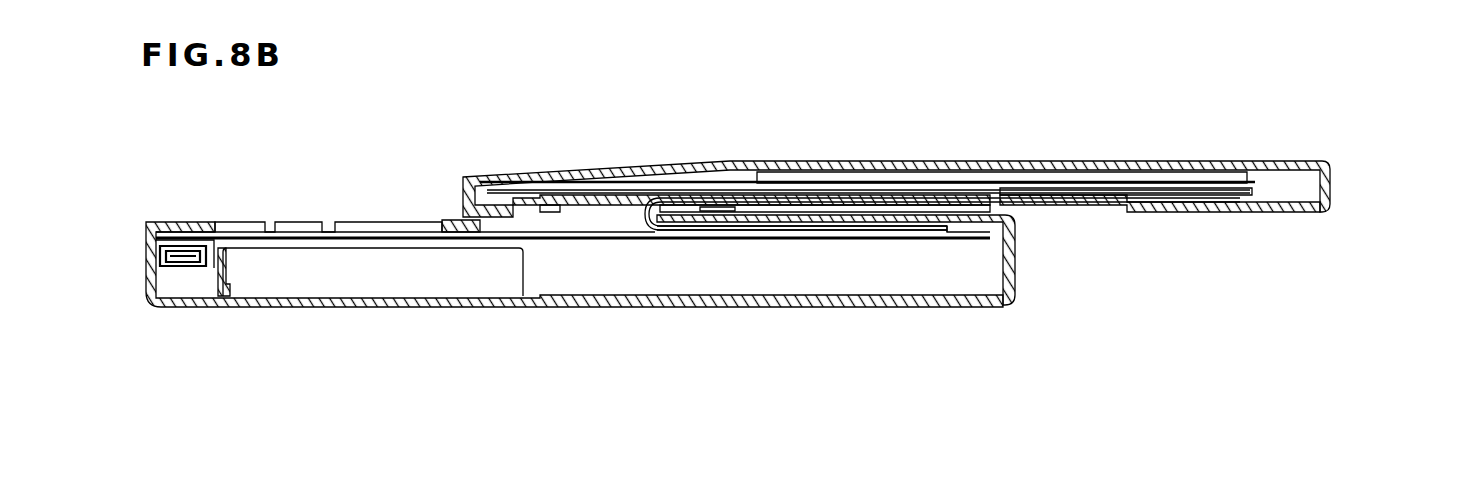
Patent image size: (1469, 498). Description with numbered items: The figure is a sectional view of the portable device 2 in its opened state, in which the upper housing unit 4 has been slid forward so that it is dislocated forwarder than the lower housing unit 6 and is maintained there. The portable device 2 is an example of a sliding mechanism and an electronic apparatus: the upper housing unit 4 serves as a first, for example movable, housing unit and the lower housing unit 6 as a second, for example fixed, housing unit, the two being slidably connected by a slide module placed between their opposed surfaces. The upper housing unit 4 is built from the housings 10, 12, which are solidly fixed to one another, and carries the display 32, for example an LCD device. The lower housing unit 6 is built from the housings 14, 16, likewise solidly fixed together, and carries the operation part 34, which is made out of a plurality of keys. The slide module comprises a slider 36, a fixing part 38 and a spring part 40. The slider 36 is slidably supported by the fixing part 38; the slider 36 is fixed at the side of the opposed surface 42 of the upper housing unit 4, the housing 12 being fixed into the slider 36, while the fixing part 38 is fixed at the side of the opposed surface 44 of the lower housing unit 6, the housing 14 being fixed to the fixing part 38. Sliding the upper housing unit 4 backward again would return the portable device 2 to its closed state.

The portable device 2 is at (1423, 157).
The upper housing unit 4 is at (1388, 127).
The lower housing unit 6 is at (1388, 237).
The housing 10 is at (1330, 160).
The housing 12 is at (1322, 212).
The housing 14 is at (1015, 240).
The housing 16 is at (1015, 278).
The display 32 is at (895, 160).
The operation part 34 is at (445, 205).
The slider 36 is at (570, 205).
The fixing part 38 is at (652, 232).
The spring part 40 is at (750, 214).
The opposed surface 42 is at (1080, 200).
The opposed surface 44 is at (978, 214).